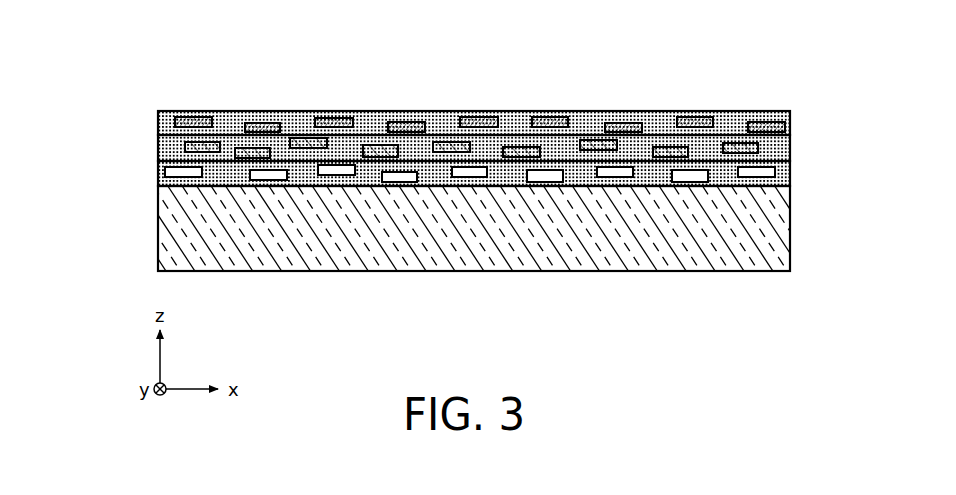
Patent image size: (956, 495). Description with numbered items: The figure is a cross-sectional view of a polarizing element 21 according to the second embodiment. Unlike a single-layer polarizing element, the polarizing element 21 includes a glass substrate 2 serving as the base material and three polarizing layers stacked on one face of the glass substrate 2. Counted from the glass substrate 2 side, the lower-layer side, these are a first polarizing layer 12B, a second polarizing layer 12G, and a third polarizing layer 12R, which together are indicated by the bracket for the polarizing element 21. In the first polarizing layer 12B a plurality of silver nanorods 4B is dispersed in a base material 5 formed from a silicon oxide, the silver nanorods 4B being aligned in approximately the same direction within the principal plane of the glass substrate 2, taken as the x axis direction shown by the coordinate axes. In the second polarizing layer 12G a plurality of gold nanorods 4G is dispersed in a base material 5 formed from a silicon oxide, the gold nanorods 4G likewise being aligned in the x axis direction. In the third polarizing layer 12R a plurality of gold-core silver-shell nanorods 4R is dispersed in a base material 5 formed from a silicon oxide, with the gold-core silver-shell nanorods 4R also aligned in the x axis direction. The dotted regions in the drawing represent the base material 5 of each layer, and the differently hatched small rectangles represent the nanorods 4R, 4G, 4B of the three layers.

The glass substrate 2 is at (778, 237).
The gold-core silver-shell nanorods 4R is at (158, 121).
The gold nanorods 4G is at (158, 147).
The silver nanorods 4B is at (158, 172).
The base material 5 is at (222, 120).
The third polarizing layer 12R is at (793, 123).
The second polarizing layer 12G is at (793, 148).
The first polarizing layer 12B is at (793, 174).
The polarizing element 21 is at (487, 123).